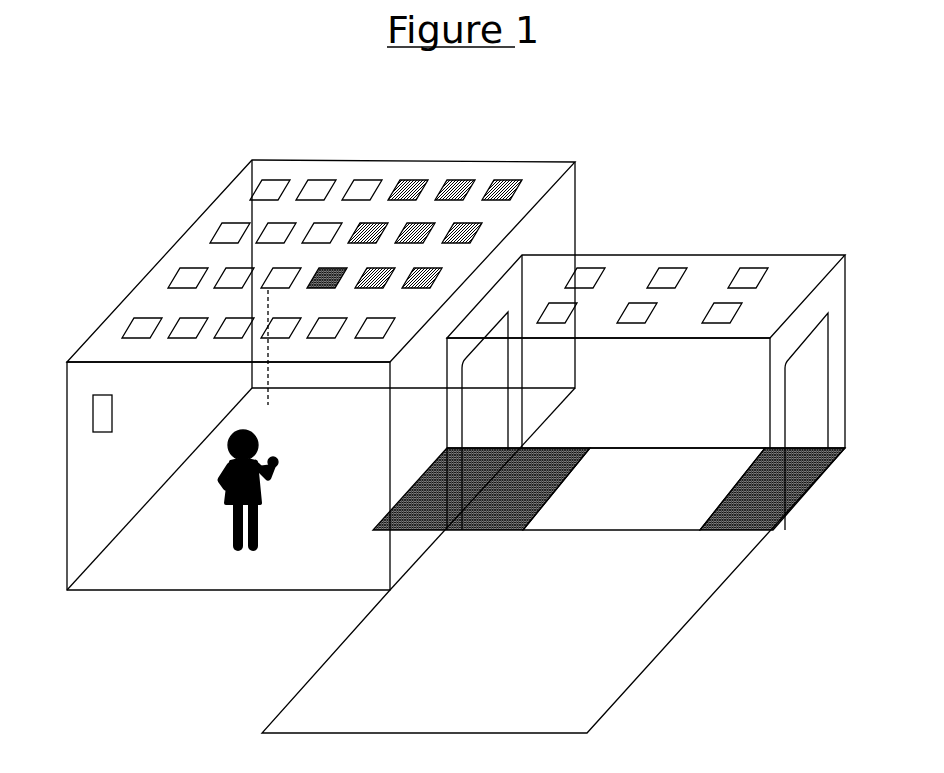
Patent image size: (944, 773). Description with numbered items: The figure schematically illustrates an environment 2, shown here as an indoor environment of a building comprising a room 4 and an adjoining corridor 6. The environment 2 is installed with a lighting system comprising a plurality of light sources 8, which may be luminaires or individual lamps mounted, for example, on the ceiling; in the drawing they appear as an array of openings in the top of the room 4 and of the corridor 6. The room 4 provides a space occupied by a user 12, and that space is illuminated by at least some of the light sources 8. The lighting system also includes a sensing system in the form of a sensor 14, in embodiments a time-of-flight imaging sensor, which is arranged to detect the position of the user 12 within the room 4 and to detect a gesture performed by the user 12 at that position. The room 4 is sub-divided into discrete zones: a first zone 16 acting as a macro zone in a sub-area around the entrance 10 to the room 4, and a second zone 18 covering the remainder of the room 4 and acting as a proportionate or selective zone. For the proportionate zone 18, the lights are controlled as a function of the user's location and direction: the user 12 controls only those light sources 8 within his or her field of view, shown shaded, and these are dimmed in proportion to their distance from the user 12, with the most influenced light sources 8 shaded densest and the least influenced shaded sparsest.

The environment 2 is at (652, 103).
The room 4 is at (547, 160).
The corridor 6 is at (725, 255).
The light source 8 is at (318, 188).
The entrance 10 is at (508, 367).
The user 12 is at (233, 507).
The sensor 14 is at (112, 415).
The first zone 16 is at (434, 519).
The second zone 18 is at (345, 495).